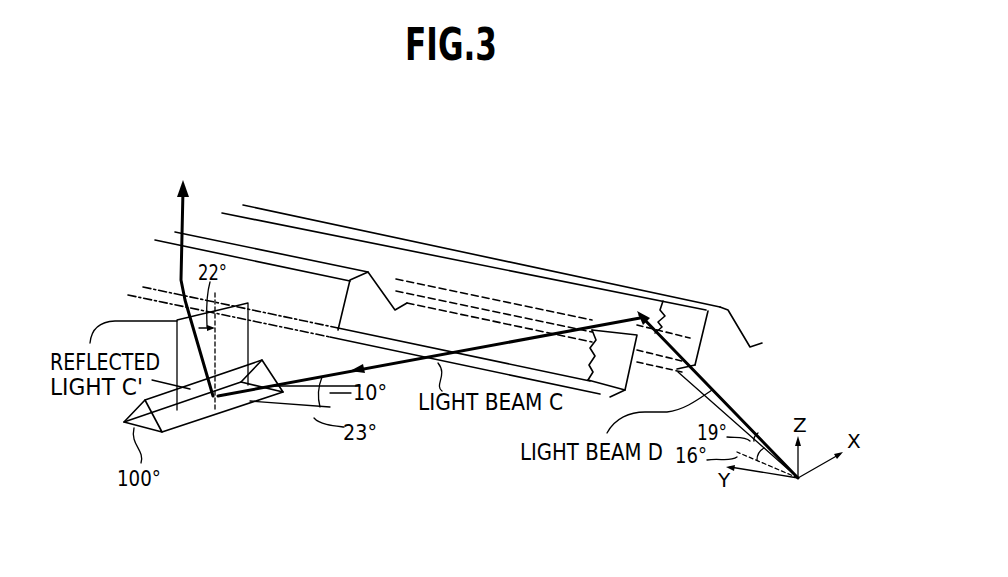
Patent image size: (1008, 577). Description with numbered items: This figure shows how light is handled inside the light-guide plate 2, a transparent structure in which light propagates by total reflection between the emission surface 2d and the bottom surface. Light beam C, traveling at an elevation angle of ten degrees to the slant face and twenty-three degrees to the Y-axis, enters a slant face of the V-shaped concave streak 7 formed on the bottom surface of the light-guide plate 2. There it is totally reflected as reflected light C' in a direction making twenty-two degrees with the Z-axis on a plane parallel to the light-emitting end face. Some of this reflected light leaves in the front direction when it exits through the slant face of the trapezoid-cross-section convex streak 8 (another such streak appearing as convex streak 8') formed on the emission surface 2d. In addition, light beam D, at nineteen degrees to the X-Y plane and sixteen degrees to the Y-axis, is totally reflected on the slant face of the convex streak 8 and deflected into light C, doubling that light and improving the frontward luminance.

The light-guide plate 2 is at (424, 269).
The emission surface 2d is at (248, 236).
The V-shaped concave streak 7 is at (184, 418).
The convex streak 8 is at (675, 312).
The reflecting mirror 8' is at (365, 240).